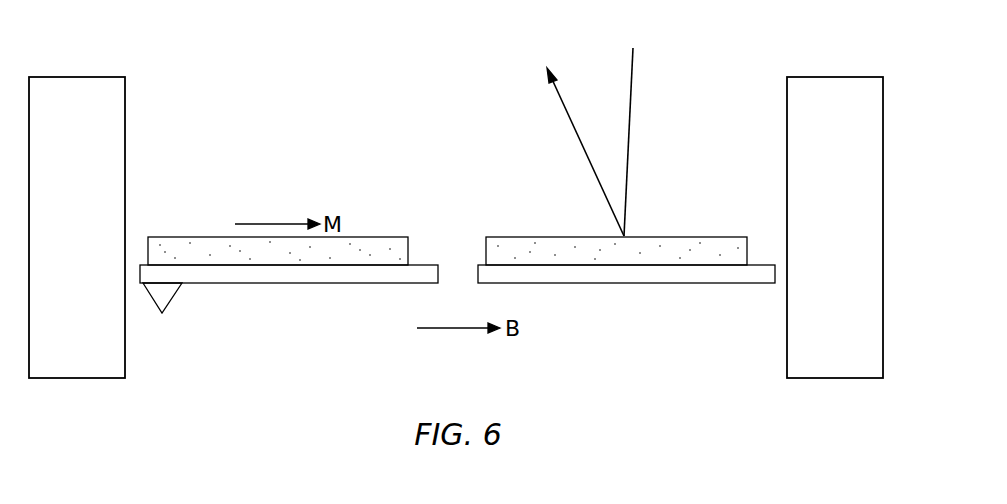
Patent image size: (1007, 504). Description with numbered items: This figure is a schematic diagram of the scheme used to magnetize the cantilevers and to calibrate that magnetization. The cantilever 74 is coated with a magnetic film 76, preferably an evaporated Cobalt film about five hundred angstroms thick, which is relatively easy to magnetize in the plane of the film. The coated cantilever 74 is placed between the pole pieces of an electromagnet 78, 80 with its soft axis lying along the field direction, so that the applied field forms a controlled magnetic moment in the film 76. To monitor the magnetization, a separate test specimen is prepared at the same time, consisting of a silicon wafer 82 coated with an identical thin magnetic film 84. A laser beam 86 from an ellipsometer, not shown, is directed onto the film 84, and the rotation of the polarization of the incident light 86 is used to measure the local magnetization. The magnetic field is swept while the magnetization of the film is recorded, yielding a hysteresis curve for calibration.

The cantilever 74 is at (293, 283).
The magnetic film 76 is at (182, 236).
The electromagnet pole piece 78 is at (127, 368).
The electromagnet pole piece 80 is at (787, 370).
The silicon wafer 82 is at (630, 285).
The thin magnetic film 84 is at (727, 233).
The laser beam 86 is at (558, 85).